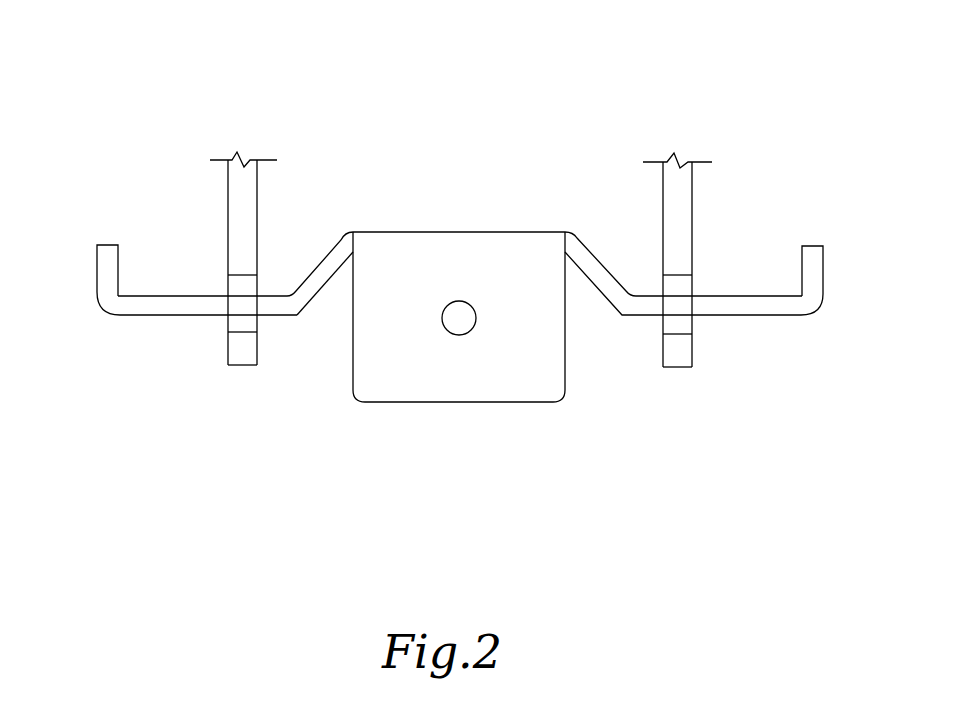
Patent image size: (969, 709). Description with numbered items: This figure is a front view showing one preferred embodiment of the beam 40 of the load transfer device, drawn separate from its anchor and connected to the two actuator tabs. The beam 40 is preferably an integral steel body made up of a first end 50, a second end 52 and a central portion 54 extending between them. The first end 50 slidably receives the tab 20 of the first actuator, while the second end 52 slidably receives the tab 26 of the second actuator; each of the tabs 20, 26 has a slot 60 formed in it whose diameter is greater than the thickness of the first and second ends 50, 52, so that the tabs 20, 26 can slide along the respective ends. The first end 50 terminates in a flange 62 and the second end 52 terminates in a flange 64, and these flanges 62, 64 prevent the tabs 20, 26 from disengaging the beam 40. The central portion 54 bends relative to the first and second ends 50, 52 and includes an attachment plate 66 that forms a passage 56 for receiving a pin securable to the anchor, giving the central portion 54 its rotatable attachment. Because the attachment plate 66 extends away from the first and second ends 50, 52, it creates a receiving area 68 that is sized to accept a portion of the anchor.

The beam 40 is at (479, 56).
The tab 20 is at (228, 182).
The tab 26 is at (692, 176).
The slot 60 is at (228, 283).
The first end 50 is at (130, 316).
The second end 52 is at (805, 316).
The central portion 54 is at (412, 232).
The passage 56 is at (471, 330).
The flange 62 is at (97, 263).
The flange 64 is at (823, 262).
The attachment plate 66 is at (556, 388).
The receiving area 68 is at (338, 296).